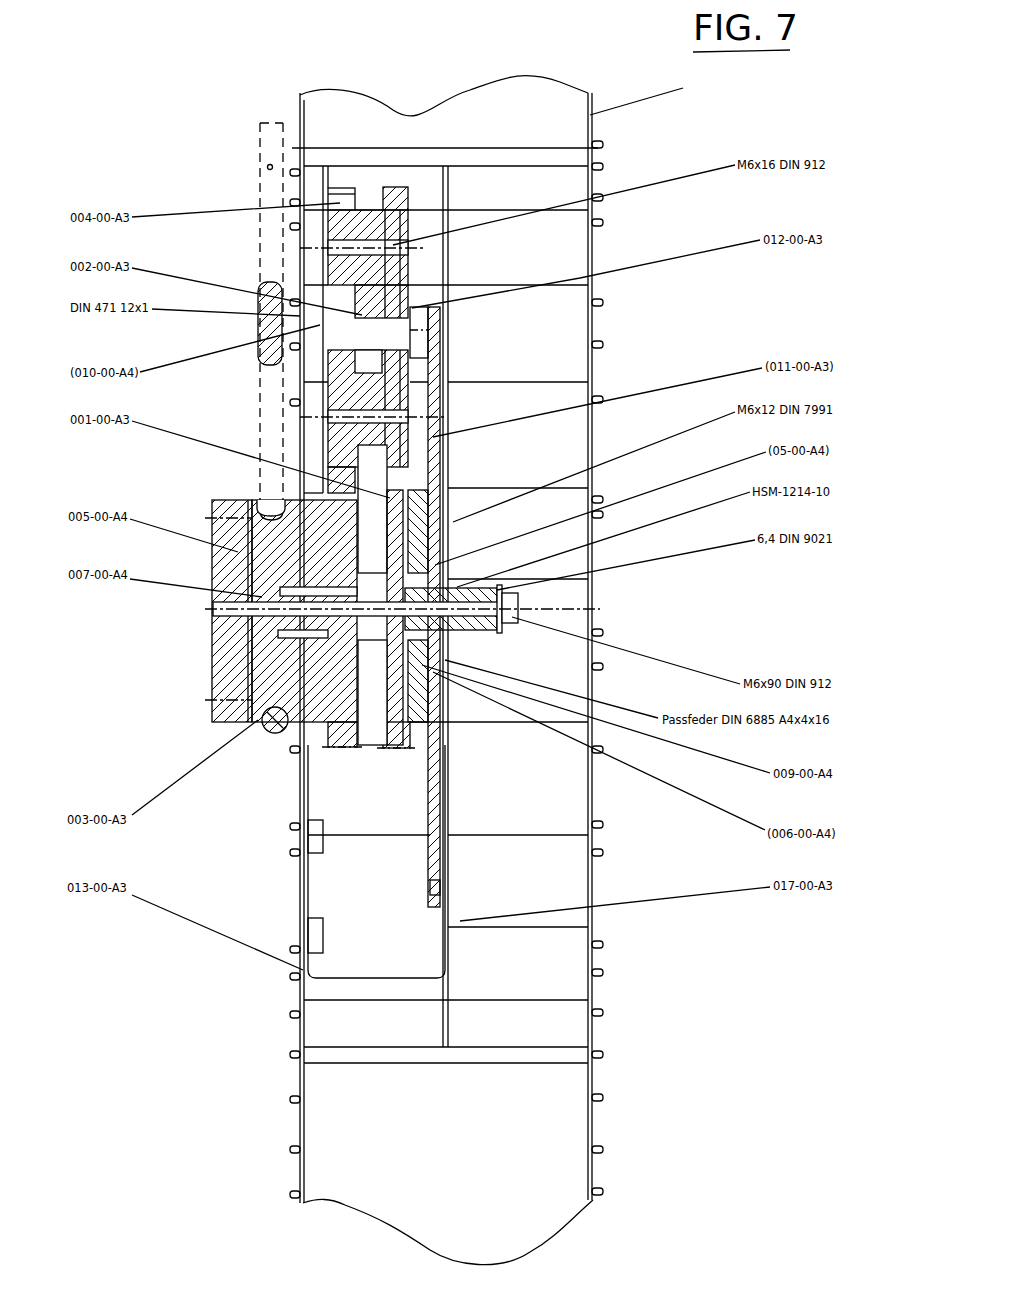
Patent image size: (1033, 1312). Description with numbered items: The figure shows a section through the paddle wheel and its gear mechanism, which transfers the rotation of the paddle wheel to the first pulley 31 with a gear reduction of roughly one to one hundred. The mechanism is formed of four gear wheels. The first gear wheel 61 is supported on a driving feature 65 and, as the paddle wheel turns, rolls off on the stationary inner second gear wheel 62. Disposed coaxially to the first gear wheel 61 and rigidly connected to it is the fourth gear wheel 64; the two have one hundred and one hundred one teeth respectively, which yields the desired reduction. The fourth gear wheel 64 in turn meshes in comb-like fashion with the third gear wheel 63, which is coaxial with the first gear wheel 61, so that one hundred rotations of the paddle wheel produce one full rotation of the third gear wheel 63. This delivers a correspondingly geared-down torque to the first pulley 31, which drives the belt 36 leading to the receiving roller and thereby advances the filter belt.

The belt 36 is at (300, 115).
The fourth gear wheel 64 is at (344, 205).
The first gear wheel 61 is at (390, 202).
The driving feature 65 is at (442, 405).
The first pulley 31 is at (300, 560).
The third gear wheel 63 is at (343, 742).
The second gear wheel 62 is at (397, 745).